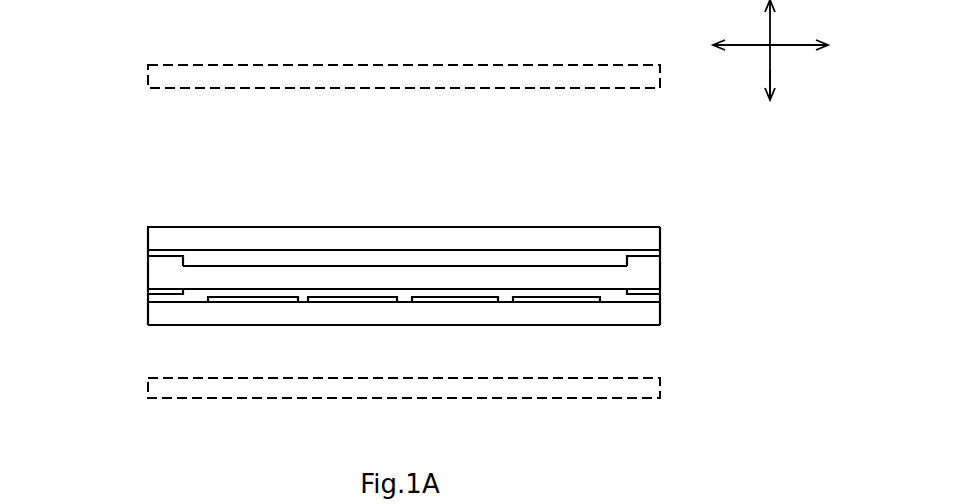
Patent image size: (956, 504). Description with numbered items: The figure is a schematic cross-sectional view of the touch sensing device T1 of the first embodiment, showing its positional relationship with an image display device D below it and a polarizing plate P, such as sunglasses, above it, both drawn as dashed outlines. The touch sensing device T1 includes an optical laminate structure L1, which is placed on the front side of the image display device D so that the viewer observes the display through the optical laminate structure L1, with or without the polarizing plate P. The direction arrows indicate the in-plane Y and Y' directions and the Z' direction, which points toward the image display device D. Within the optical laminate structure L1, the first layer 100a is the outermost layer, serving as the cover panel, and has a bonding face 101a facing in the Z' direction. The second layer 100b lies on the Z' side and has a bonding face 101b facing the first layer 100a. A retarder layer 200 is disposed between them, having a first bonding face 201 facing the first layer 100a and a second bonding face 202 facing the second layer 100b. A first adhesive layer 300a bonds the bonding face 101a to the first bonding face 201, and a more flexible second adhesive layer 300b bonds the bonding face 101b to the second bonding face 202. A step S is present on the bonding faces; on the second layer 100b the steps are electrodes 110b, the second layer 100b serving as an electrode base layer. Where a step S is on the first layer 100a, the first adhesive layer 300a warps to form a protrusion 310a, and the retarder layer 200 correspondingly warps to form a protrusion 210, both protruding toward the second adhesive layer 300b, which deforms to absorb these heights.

The touch sensing device T1 is at (145, 224).
The polarizing plate P is at (148, 72).
The image display device D is at (148, 383).
The optical laminate structure L1 is at (660, 265).
The step S is at (165, 250).
The first layer 100a is at (628, 240).
The second layer 100b is at (644, 315).
The bonding face 101a is at (194, 250).
The bonding face 101b is at (192, 305).
The electrode 110b is at (251, 297).
The retarder layer 200 is at (155, 277).
The first bonding face 201 is at (295, 266).
The second bonding face 202 is at (300, 302).
The protrusion 210 is at (165, 290).
The first adhesive layer 300a is at (163, 255).
The second adhesive layer 300b is at (160, 297).
The protrusion 310a is at (170, 268).
The Y direction Y is at (784, 50).
The Y' direction Y' is at (714, 45).
The Z' direction Z' is at (772, 99).